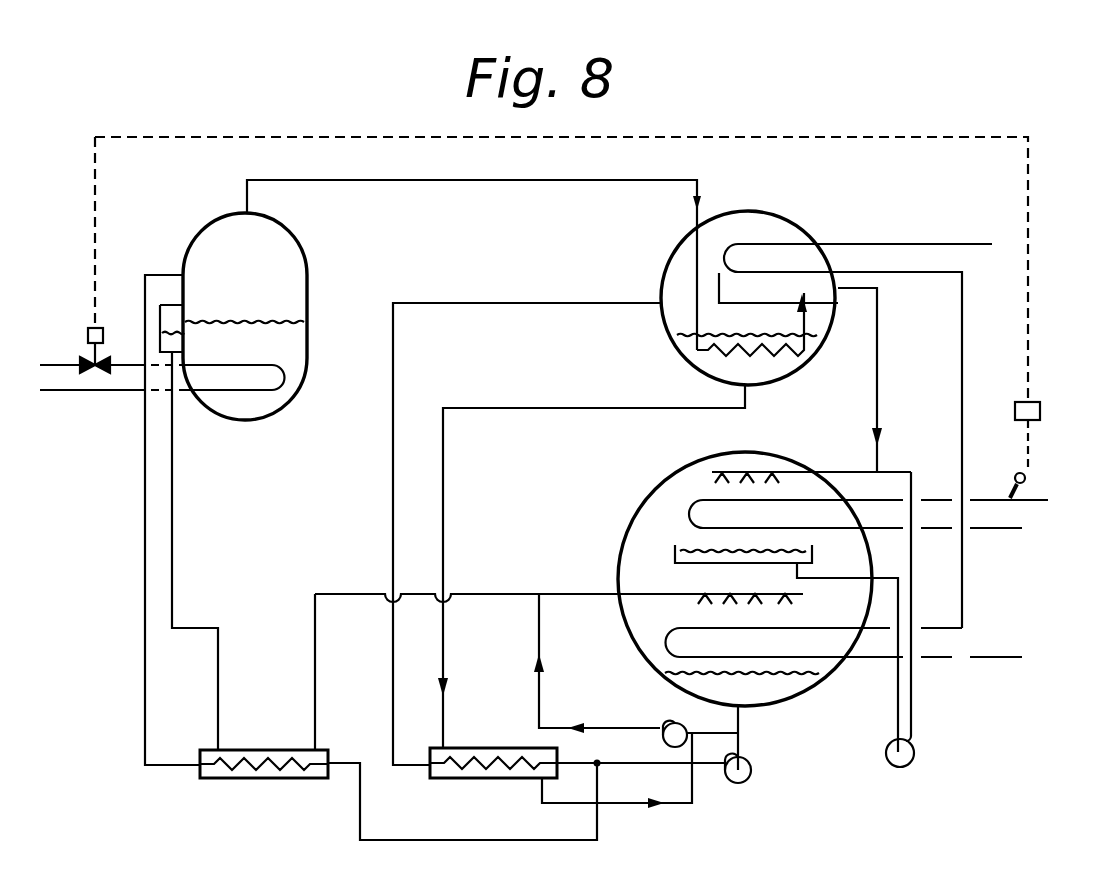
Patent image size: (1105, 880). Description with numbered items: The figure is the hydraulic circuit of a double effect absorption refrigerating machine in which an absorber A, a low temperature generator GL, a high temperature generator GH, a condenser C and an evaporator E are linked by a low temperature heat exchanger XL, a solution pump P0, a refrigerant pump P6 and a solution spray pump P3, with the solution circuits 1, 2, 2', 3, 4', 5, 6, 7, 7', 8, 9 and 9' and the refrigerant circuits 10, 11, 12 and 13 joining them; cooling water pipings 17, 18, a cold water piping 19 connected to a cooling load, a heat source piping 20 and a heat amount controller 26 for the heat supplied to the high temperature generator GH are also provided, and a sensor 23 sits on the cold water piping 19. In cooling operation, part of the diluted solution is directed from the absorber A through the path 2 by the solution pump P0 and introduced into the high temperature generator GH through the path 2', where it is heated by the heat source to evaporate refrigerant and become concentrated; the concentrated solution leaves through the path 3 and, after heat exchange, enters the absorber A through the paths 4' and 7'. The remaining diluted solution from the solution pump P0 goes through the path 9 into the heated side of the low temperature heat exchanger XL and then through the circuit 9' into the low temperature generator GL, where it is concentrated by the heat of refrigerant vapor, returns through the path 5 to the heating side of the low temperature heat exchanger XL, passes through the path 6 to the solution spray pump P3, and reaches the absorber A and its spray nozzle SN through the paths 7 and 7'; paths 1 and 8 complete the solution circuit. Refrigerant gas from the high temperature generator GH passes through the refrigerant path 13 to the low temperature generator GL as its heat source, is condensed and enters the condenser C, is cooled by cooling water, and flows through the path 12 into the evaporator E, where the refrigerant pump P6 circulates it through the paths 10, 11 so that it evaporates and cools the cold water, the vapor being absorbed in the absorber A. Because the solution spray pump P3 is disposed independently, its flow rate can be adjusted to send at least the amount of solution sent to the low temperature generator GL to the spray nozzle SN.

The solution circuit 1 is at (741, 738).
The solution path 2 is at (449, 806).
The solution path 2' is at (211, 526).
The solution path 3 is at (174, 536).
The solution path 4' is at (427, 643).
The solution path 5 is at (624, 408).
The solution path 6 is at (686, 804).
The solution path 7 is at (597, 663).
The solution circuit 7' is at (671, 565).
The solution circuit 8 is at (738, 726).
The solution path 9 is at (614, 732).
The solution circuit 9' is at (501, 534).
The refrigerant path 10 is at (898, 696).
The refrigerant path 11 is at (916, 692).
The refrigerant path 12 is at (878, 374).
The refrigerant path 13 is at (484, 174).
The cooling water piping 17 is at (1005, 658).
The cooling water piping 18 is at (880, 242).
The cold water piping 19 is at (1004, 530).
The heat source piping 20 is at (86, 395).
The temperature sensor 23 is at (1020, 470).
The heat amount controller 26 is at (90, 332).
The high temperature generator GH is at (210, 222).
The condenser C is at (794, 216).
The low temperature generator GL is at (818, 362).
The evaporator E is at (622, 515).
The spray nozzles CN is at (736, 470).
The spray nozzle SN is at (659, 602).
The absorber A is at (666, 676).
The low temperature heat exchanger XL is at (500, 779).
The solution spray pump P3 is at (658, 740).
The solution pump P0 is at (749, 782).
The refrigerant pump P6 is at (916, 754).